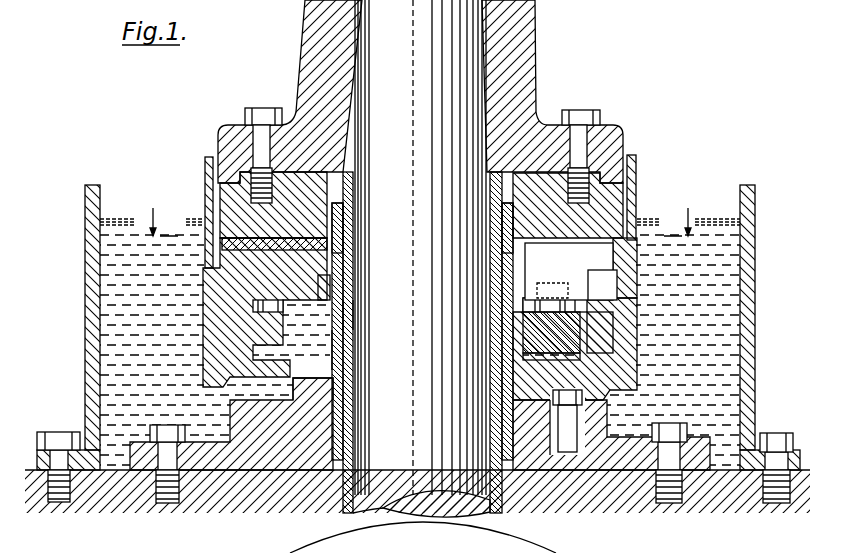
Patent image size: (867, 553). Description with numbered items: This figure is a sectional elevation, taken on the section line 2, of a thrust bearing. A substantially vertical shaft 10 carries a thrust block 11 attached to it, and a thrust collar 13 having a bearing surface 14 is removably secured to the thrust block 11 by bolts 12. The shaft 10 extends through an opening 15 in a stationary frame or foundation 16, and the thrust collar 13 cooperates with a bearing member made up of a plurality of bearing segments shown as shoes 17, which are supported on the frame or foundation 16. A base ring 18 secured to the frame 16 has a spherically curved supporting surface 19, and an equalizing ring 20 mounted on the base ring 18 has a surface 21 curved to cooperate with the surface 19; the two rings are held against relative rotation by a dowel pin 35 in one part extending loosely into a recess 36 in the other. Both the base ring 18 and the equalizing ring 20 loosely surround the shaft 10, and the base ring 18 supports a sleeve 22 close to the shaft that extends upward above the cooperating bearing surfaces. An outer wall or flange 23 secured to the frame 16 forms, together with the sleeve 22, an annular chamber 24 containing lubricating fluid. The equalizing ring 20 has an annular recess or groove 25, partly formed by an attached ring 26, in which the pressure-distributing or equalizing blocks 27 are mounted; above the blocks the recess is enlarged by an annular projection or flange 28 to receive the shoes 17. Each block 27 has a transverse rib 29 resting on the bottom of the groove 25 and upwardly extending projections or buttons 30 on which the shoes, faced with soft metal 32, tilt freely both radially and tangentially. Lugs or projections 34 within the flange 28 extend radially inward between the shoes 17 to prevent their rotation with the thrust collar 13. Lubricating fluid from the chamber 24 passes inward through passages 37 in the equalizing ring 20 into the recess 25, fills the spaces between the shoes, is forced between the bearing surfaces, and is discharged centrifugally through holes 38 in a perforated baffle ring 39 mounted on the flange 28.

The section line 2- 2 is at (420, 222).
The shaft 10 is at (375, 477).
The thrust block 11 is at (540, 80).
The bolts 12 is at (265, 108).
The thrust collar 13 is at (596, 233).
The bearing surface 14 is at (626, 212).
The opening 15 is at (508, 497).
The frame or foundation 16 is at (618, 485).
The shoes 17 is at (569, 271).
The base ring 18 is at (662, 470).
The spherically curved supporting surface 19 is at (257, 392).
The equalizing ring 20 is at (625, 377).
The curved surface 21 is at (300, 402).
The sleeve 22 is at (342, 312).
The outer wall or flange 23 is at (98, 307).
The annular chamber 24 is at (122, 270).
The annular recess or groove 25 is at (300, 350).
The attached ring 26 is at (333, 347).
The pressure-distributing or equalizing blocks 27 is at (335, 318).
The annular projection or flange 28 is at (250, 305).
The transverse rib 29 is at (605, 363).
The projections or buttons 30 is at (505, 300).
The soft metal facing 32 is at (505, 246).
The lugs or projections 34 is at (600, 282).
The dowel pin 35 is at (578, 458).
The recess 36 is at (552, 394).
The passages 37 is at (232, 408).
The holes 38 is at (213, 225).
The perforated baffle ring 39 is at (205, 160).